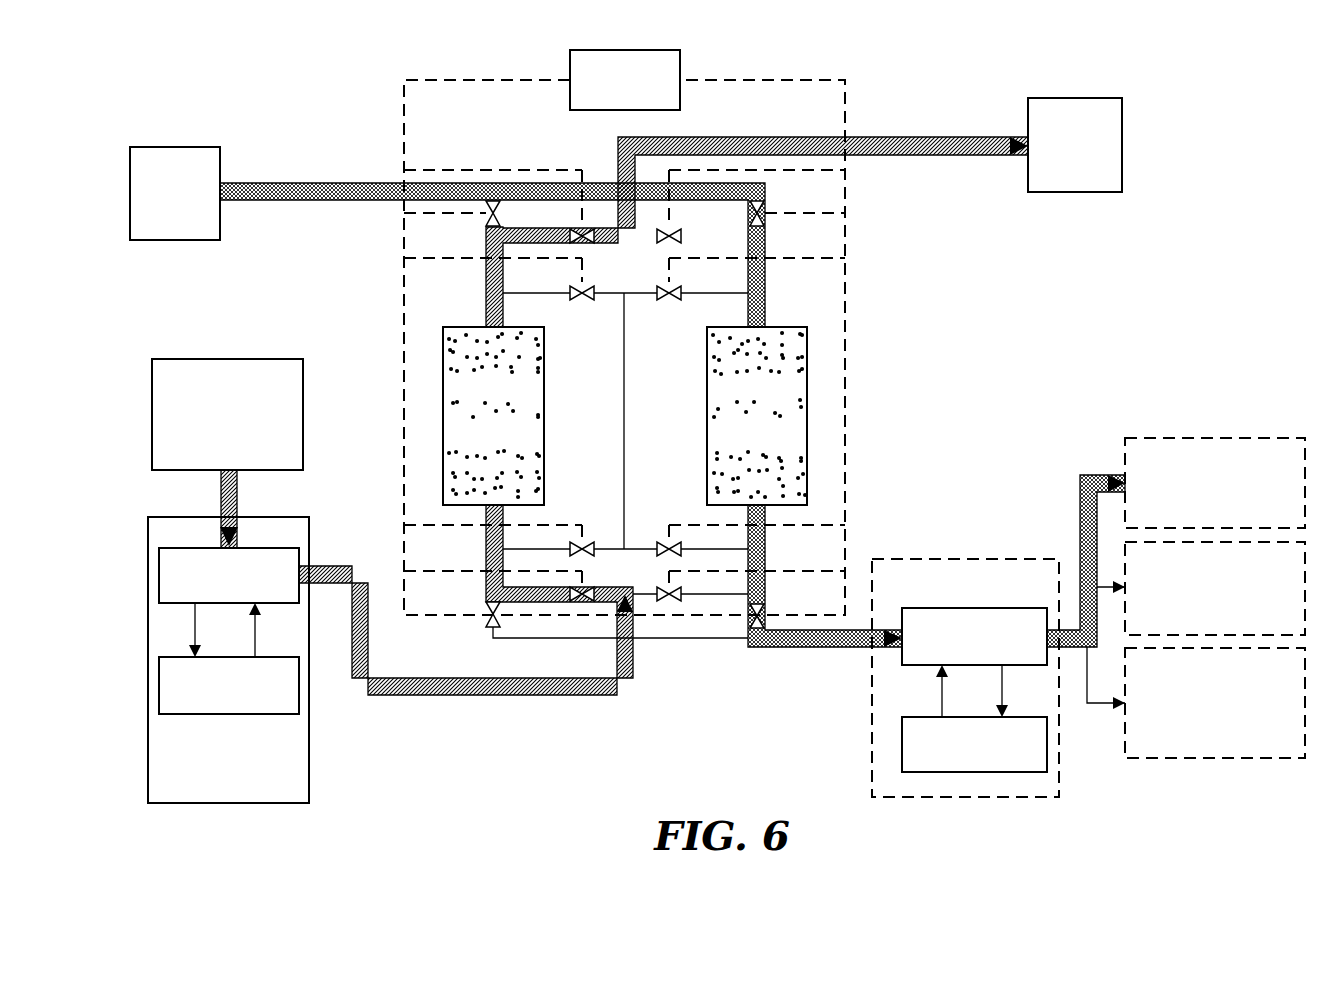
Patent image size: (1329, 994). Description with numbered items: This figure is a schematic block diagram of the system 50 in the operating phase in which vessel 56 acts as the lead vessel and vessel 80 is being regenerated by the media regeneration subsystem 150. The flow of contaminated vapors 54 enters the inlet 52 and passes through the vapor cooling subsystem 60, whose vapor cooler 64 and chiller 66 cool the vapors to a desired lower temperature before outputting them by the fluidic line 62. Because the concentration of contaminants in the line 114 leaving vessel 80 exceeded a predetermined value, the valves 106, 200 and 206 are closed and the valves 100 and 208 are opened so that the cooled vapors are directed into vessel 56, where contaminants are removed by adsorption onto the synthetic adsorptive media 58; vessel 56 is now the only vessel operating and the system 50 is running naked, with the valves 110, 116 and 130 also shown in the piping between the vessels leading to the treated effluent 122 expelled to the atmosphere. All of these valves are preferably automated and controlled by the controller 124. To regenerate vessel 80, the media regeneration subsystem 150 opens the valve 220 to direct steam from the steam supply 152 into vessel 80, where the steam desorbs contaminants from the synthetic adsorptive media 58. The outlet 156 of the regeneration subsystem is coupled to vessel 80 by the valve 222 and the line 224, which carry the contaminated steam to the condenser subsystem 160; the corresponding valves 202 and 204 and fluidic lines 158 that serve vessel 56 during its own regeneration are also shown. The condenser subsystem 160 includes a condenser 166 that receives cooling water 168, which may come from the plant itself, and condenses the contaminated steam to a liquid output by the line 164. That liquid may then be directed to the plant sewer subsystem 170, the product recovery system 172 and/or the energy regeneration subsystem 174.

The system 50 is at (624, 317).
The inlet 52 is at (238, 485).
The flow of contaminated vapors 54 is at (227, 414).
The vessel 56 is at (546, 395).
The synthetic adsorptive media 58 is at (460, 372).
The vapor cooling subsystem 60 is at (228, 660).
The fluidic line 62 is at (462, 697).
The vapor cooler 64 is at (229, 575).
The chiller 66 is at (229, 658).
The vessel 80 is at (706, 397).
The valve 100 is at (578, 601).
The valve 106 is at (578, 299).
The valve 110 is at (667, 543).
The line 114 is at (766, 270).
The valve 116 is at (672, 231).
The treated effluent 122 is at (1075, 145).
The controller 124 is at (625, 80).
The valve 130 is at (669, 299).
The media regeneration subsystem 150 is at (1127, 388).
The steam supply 152 is at (175, 193).
The outlet 156 is at (283, 203).
The fluidic lines 158 is at (572, 640).
The condenser subsystem 160 is at (965, 678).
The line 164 is at (1075, 650).
The condenser 166 is at (974, 636).
The cooling water 168 is at (974, 718).
The plant sewer subsystem 170 is at (1215, 483).
The product recovery system 172 is at (1215, 588).
The energy regeneration subsystem 174 is at (1215, 703).
The valve 200 is at (667, 602).
The valve 202 is at (484, 216).
The valve 204 is at (484, 620).
The valve 206 is at (580, 543).
The valve 208 is at (585, 230).
The valve 220 is at (768, 210).
The valve 222 is at (748, 617).
The line 224 is at (767, 557).